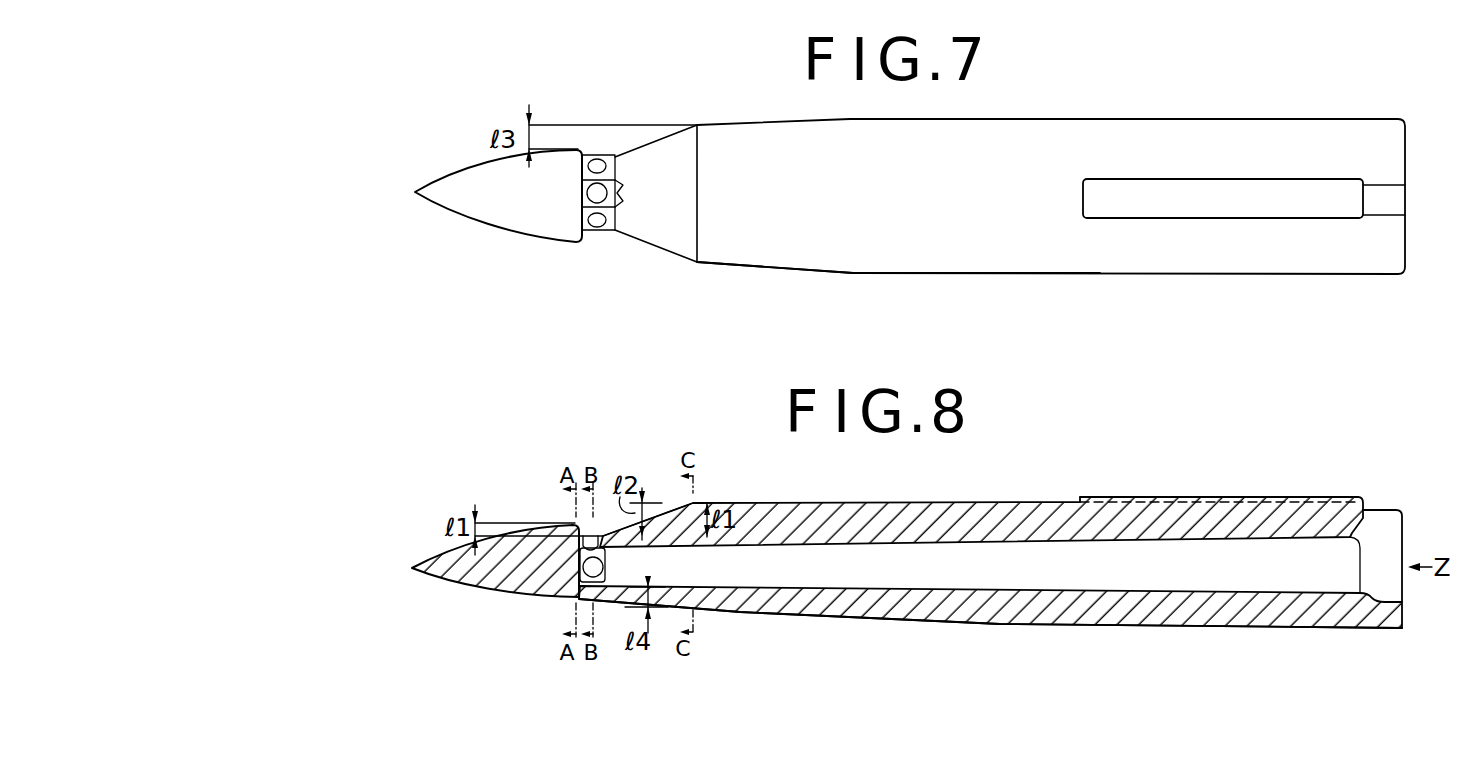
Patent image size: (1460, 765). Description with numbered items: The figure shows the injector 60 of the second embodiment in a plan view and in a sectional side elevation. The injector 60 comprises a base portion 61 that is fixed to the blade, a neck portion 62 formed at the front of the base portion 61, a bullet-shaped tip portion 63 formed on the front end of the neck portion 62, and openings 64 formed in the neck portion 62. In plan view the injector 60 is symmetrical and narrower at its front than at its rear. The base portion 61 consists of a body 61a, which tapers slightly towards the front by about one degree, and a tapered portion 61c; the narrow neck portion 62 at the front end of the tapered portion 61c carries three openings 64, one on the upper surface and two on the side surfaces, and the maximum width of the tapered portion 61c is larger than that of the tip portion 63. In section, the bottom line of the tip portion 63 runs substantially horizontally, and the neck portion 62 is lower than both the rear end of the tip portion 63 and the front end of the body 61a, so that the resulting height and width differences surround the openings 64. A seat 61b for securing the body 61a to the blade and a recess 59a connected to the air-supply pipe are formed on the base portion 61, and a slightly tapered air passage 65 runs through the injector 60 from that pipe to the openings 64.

In FIG. 7, the recess 59a is at (1395, 202).
In FIG. 8, the recess 59a is at (1407, 538).
In FIG. 7, the injector 60 is at (935, 201).
In FIG. 8, the injector 60 is at (934, 561).
In FIG. 7, the base portion 61 is at (1165, 264).
In FIG. 8, the base portion 61 is at (864, 505).
In FIG. 7, the body 61a is at (963, 269).
In FIG. 8, the body 61a is at (1008, 620).
In FIG. 7, the seat 61b is at (1268, 190).
In FIG. 8, the seat 61b is at (1245, 500).
In FIG. 7, the tapered portion 61c is at (670, 243).
In FIG. 8, the tapered portion 61c is at (665, 608).
In FIG. 7, the neck portion 62 is at (609, 230).
In FIG. 8, the neck portion 62 is at (603, 593).
In FIG. 7, the tip portion 63 is at (513, 225).
In FIG. 8, the tip portion 63 is at (497, 583).
In FIG. 7, the openings 64 is at (607, 194).
In FIG. 8, the openings 64 is at (600, 548).
In FIG. 8, the air passage 65 is at (1222, 583).